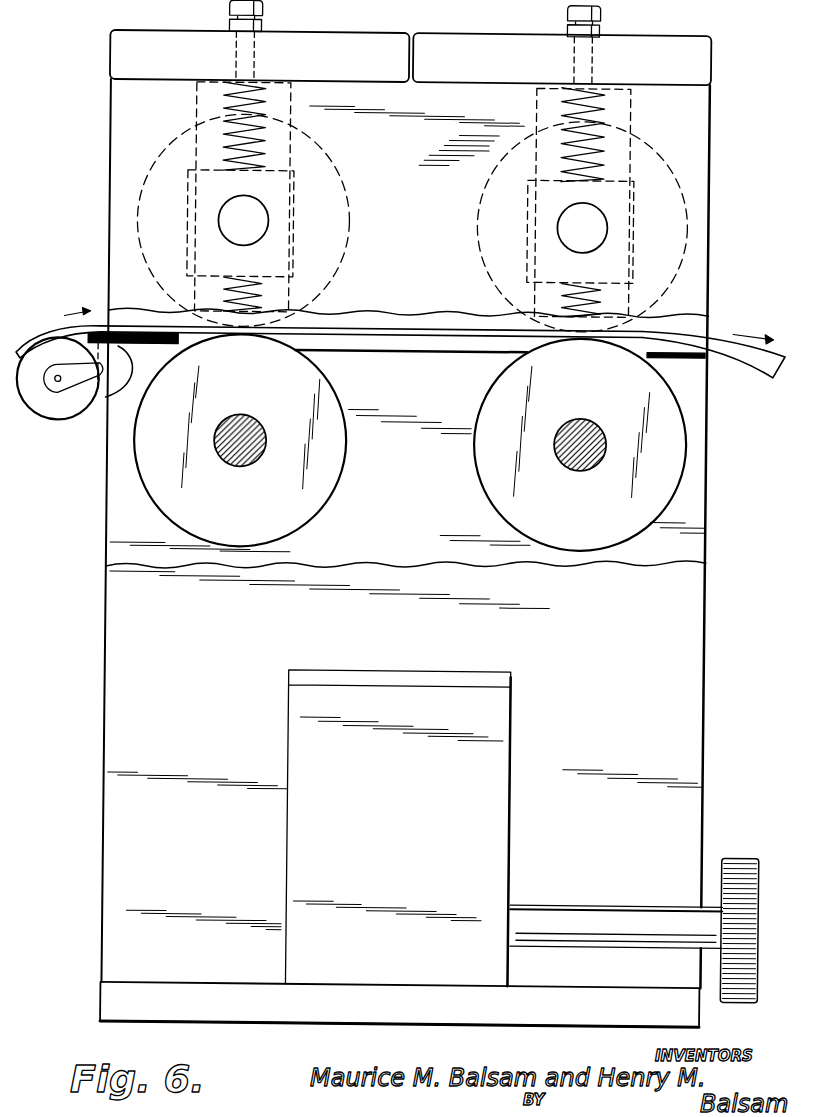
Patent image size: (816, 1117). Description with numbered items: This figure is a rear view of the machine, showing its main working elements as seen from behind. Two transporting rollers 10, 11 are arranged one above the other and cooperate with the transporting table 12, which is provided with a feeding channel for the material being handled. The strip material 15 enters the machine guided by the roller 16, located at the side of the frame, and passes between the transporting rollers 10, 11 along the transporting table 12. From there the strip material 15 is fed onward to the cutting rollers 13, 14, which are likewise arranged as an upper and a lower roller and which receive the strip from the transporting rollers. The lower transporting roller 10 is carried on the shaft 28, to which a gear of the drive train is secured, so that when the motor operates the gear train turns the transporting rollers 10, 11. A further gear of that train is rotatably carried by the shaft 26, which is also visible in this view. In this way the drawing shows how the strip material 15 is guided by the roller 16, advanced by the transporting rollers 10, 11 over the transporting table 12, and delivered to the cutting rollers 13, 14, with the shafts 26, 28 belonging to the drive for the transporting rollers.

The transporting roller 10 is at (318, 489).
The transporting roller 11 is at (330, 170).
The transporting table 12 is at (160, 341).
The cutting roller 13 is at (492, 482).
The cutting roller 14 is at (484, 210).
The strip material 15 is at (53, 329).
The guide roller 16 is at (52, 410).
The shaft 26 is at (252, 450).
The shaft 28 is at (265, 232).